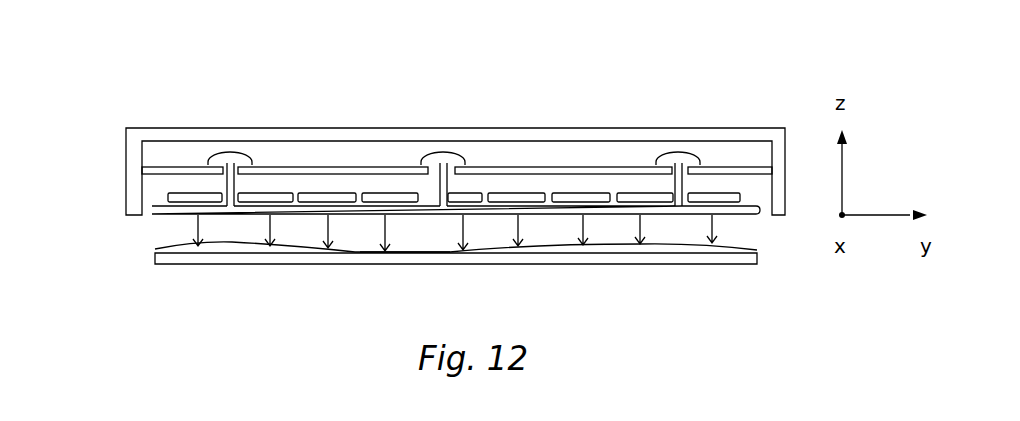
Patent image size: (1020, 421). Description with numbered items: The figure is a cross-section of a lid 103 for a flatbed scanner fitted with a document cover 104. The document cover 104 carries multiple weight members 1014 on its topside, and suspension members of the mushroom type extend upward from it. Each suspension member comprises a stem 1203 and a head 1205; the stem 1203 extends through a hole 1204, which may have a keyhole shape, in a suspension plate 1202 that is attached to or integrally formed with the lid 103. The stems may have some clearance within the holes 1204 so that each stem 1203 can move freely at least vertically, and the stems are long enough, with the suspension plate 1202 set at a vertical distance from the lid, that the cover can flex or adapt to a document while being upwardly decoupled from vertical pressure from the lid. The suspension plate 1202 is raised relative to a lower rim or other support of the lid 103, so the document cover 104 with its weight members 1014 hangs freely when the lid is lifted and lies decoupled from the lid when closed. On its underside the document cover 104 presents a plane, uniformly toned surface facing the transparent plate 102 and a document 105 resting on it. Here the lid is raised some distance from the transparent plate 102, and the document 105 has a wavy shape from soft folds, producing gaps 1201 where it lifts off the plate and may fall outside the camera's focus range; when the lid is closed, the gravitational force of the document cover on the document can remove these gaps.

The transparent plate 102 is at (707, 266).
The lid 103 is at (766, 128).
The document cover 104 is at (752, 215).
The document 105 is at (485, 249).
The weight members 1014 is at (178, 192).
The gaps 1201 is at (240, 258).
The suspension plate 1202 is at (177, 165).
The stem 1203 is at (226, 201).
The hole 1204 is at (220, 160).
The head 1205 is at (228, 152).